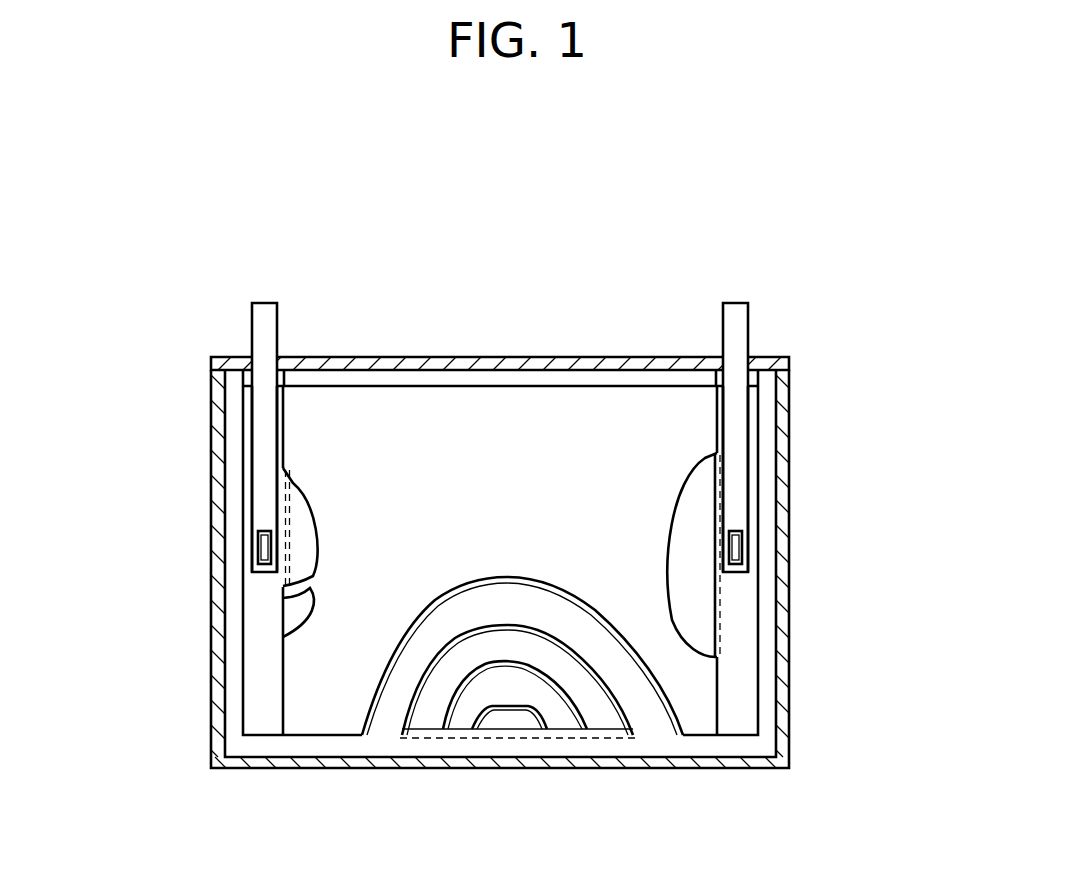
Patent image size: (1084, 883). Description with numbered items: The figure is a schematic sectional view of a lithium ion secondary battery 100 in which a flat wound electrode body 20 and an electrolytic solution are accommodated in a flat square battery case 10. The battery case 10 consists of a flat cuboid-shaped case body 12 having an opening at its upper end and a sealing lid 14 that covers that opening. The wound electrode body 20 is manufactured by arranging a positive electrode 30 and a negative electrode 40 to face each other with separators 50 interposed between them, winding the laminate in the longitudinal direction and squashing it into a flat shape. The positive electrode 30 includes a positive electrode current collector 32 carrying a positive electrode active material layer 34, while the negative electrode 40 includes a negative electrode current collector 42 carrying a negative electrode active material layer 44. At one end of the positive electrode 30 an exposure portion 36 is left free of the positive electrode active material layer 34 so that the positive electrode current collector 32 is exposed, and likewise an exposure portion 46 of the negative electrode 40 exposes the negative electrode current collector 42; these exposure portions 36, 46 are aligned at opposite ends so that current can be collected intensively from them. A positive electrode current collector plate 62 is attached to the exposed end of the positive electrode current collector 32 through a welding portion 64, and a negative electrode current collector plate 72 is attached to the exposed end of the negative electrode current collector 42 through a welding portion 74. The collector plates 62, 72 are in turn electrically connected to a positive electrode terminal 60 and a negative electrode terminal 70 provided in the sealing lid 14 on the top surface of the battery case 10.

The lithium ion secondary battery 100 is at (785, 240).
The battery case 10 is at (790, 472).
The case body 12 is at (790, 568).
The sealing lid 14 is at (625, 357).
The wound electrode body 20 is at (382, 418).
The positive electrode 30 is at (465, 717).
The positive electrode current collector 32 is at (262, 705).
The positive electrode active material layer 34 is at (303, 527).
The exposure portion of positive electrode 36 is at (221, 571).
The negative electrode 40 is at (295, 625).
The negative electrode current collector 42 is at (740, 710).
The negative electrode active material layer 44 is at (305, 608).
The exposure portion of negative electrode 46 is at (808, 564).
The separator 50 is at (290, 586).
The positive electrode terminal 60 is at (265, 303).
The positive electrode current collector plate 62 is at (262, 443).
The welding portion 64 is at (262, 546).
The negative electrode terminal 70 is at (736, 303).
The negative electrode current collector plate 72 is at (735, 440).
The welding portion 74 is at (738, 546).